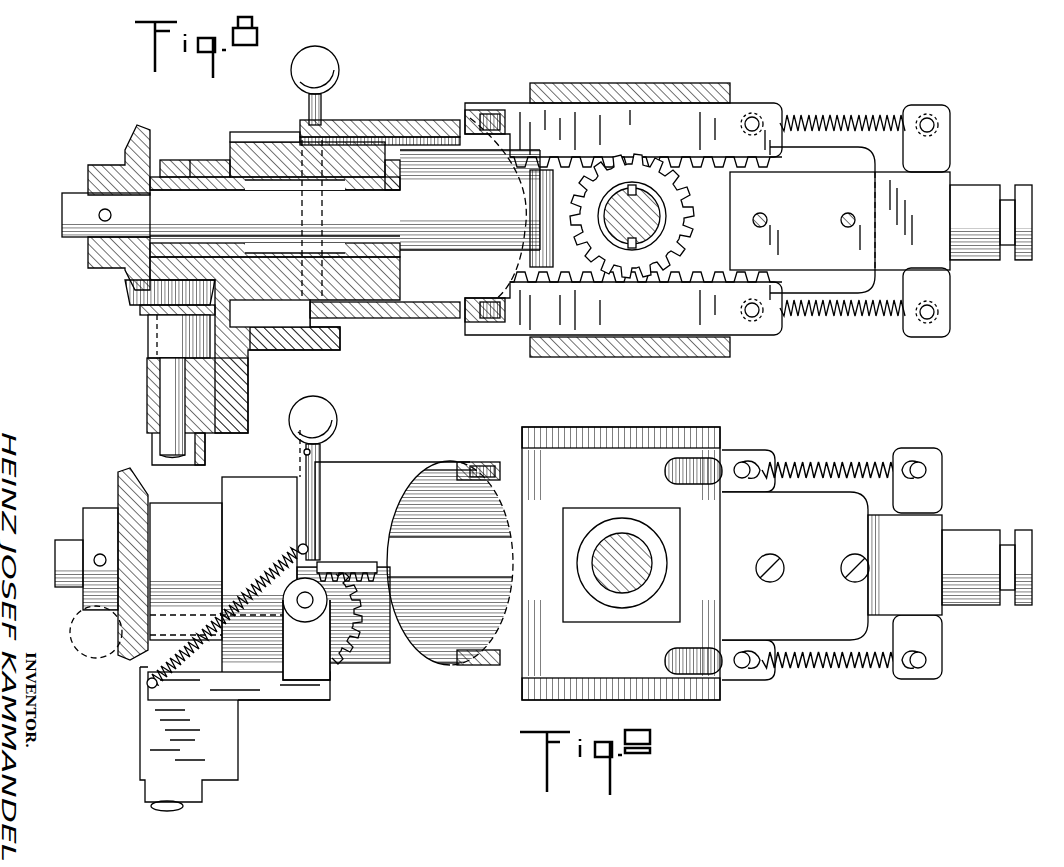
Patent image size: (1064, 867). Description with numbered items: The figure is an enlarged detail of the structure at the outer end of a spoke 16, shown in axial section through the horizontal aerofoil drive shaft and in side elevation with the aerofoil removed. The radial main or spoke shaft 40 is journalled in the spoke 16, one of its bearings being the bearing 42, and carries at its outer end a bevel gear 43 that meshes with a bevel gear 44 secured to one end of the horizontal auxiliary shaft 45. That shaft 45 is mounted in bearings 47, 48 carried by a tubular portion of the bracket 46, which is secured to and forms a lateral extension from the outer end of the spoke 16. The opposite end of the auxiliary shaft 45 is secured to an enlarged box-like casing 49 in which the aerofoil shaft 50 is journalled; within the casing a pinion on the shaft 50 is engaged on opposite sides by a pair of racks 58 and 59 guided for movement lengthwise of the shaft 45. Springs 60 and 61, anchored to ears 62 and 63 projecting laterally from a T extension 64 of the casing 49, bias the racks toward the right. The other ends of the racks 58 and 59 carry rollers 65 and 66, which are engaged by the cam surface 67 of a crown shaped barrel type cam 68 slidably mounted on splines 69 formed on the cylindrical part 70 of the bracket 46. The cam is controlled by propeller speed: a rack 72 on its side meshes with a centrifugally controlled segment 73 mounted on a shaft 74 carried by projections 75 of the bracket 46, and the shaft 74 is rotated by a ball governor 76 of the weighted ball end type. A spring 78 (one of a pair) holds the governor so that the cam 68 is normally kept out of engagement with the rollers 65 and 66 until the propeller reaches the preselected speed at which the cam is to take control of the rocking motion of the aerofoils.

In FIG. 8, the spoke 16 is at (205, 452).
In FIG. 9, the spoke 16 is at (150, 750).
In FIG. 8, the radial main or spoke shaft 40 is at (170, 432).
In FIG. 8, the bearing 42 is at (150, 378).
In FIG. 8, the bevel gear 43 is at (150, 300).
In FIG. 9, the bevel gear 43 is at (130, 660).
In FIG. 8, the bevel gear 44 is at (150, 135).
In FIG. 9, the bevel gear 44 is at (122, 505).
In FIG. 8, the horizontal auxiliary shaft 45 is at (72, 212).
In FIG. 9, the horizontal auxiliary shaft 45 is at (447, 580).
In FIG. 8, the bracket 46 is at (300, 322).
In FIG. 9, the bracket 46 is at (258, 495).
In FIG. 8, the bearing 47 is at (190, 162).
In FIG. 8, the bearing 48 is at (400, 320).
In FIG. 9, the box-like casing 49 is at (636, 426).
In FIG. 8, the aerofoil shaft 50 is at (628, 230).
In FIG. 9, the aerofoil shaft 50 is at (612, 545).
In FIG. 8, the rack 58 is at (640, 108).
In FIG. 9, the rack 58 is at (725, 456).
In FIG. 8, the rack 59 is at (705, 345).
In FIG. 9, the rack 59 is at (722, 675).
In FIG. 8, the spring 60 is at (808, 118).
In FIG. 9, the spring 60 is at (822, 464).
In FIG. 8, the spring 61 is at (830, 322).
In FIG. 9, the spring 61 is at (820, 675).
In FIG. 8, the ear 62 is at (938, 143).
In FIG. 9, the ear 62 is at (935, 478).
In FIG. 8, the ear 63 is at (940, 300).
In FIG. 9, the ear 63 is at (930, 641).
In FIG. 8, the T extension 64 is at (822, 233).
In FIG. 9, the T extension 64 is at (918, 580).
In FIG. 8, the roller 65 is at (475, 120).
In FIG. 9, the roller 65 is at (468, 468).
In FIG. 8, the roller 66 is at (480, 322).
In FIG. 9, the roller 66 is at (465, 663).
In FIG. 9, the cam surface 67 is at (410, 490).
In FIG. 8, the crown shaped barrel type cam 68 is at (385, 126).
In FIG. 9, the crown shaped barrel type cam 68 is at (345, 475).
In FIG. 8, the splines 69 is at (258, 136).
In FIG. 8, the cylindrical part 70 is at (270, 313).
In FIG. 9, the rack 72 is at (340, 566).
In FIG. 9, the centrifugally controlled segment 73 is at (355, 665).
In FIG. 9, the shaft 74 is at (320, 675).
In FIG. 8, the projections 75 is at (278, 345).
In FIG. 9, the projections 75 is at (305, 610).
In FIG. 8, the ball governor 76 is at (330, 62).
In FIG. 9, the ball governor 76 is at (318, 410).
In FIG. 9, the spring 78 is at (200, 640).